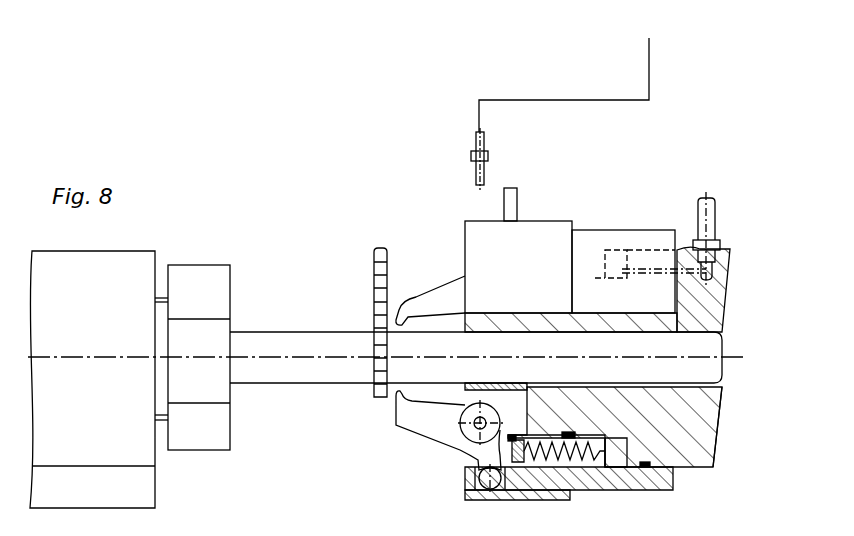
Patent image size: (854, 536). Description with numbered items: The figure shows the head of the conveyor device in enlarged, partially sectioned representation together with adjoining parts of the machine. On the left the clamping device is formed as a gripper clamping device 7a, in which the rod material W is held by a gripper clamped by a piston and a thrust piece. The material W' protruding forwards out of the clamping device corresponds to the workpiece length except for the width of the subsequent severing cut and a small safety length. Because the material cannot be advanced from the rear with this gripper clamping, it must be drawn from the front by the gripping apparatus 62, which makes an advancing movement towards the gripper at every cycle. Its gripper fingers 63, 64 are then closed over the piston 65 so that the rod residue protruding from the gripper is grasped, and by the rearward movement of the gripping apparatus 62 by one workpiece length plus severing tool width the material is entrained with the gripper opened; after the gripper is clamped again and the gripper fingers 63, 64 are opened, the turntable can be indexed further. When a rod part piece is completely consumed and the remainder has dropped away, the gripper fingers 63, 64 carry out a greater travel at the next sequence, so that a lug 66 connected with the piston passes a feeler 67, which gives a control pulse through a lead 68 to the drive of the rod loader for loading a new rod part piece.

The gripper clamping device 7a is at (177, 250).
The gripping apparatus 62 is at (587, 204).
The gripper finger 63 is at (436, 296).
The gripper finger 64 is at (417, 418).
The piston 65 is at (603, 480).
The lug 66 is at (512, 212).
The feeler 67 is at (487, 178).
The lead 68 is at (565, 99).
The material W is at (476, 424).
The protruding material W' is at (304, 393).